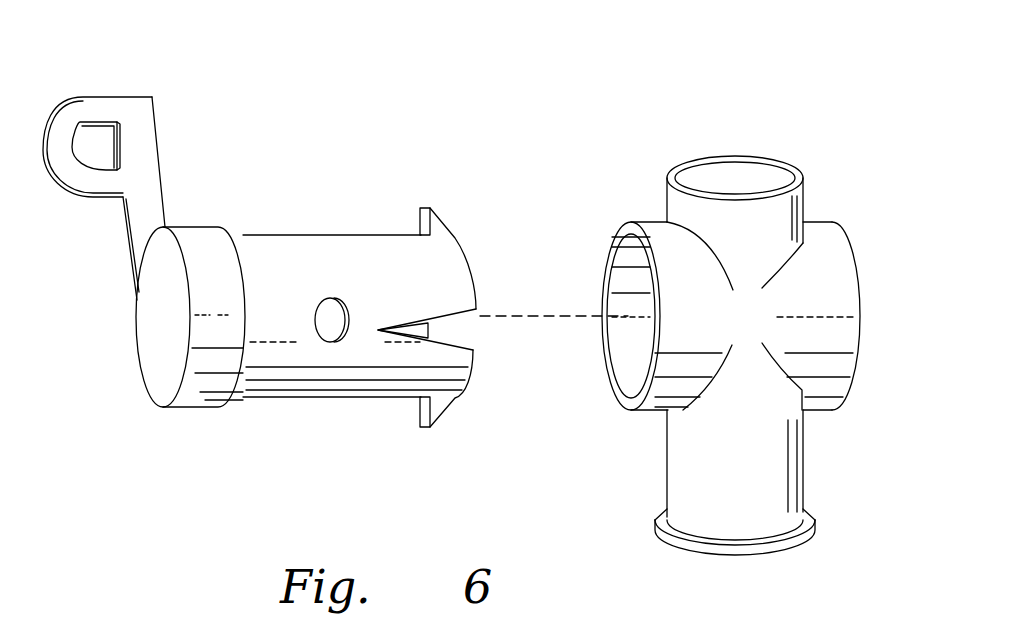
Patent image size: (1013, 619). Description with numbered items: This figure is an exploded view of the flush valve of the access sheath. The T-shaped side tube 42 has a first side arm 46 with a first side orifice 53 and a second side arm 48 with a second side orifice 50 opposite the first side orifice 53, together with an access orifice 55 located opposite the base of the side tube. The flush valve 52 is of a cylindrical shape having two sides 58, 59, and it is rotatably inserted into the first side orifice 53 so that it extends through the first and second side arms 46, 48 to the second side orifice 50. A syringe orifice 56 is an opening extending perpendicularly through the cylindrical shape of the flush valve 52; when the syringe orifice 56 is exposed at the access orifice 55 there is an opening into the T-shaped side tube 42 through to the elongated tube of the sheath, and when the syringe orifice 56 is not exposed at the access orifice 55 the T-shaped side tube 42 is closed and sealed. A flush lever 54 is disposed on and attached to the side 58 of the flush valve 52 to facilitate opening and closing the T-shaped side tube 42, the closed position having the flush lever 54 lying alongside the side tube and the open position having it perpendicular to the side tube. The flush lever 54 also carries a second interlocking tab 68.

The T-shaped side tube 42 is at (725, 351).
The first side arm 46 is at (712, 287).
The second side arm 48 is at (837, 296).
The second side orifice 50 is at (858, 345).
The flush valve 52 is at (302, 201).
The first side orifice 53 is at (612, 390).
The flush lever 54 is at (122, 222).
The access orifice 55 is at (767, 553).
The syringe orifice 56 is at (333, 343).
The side 58 is at (178, 326).
The side 59 is at (483, 304).
The second interlocking tab 68 is at (102, 122).